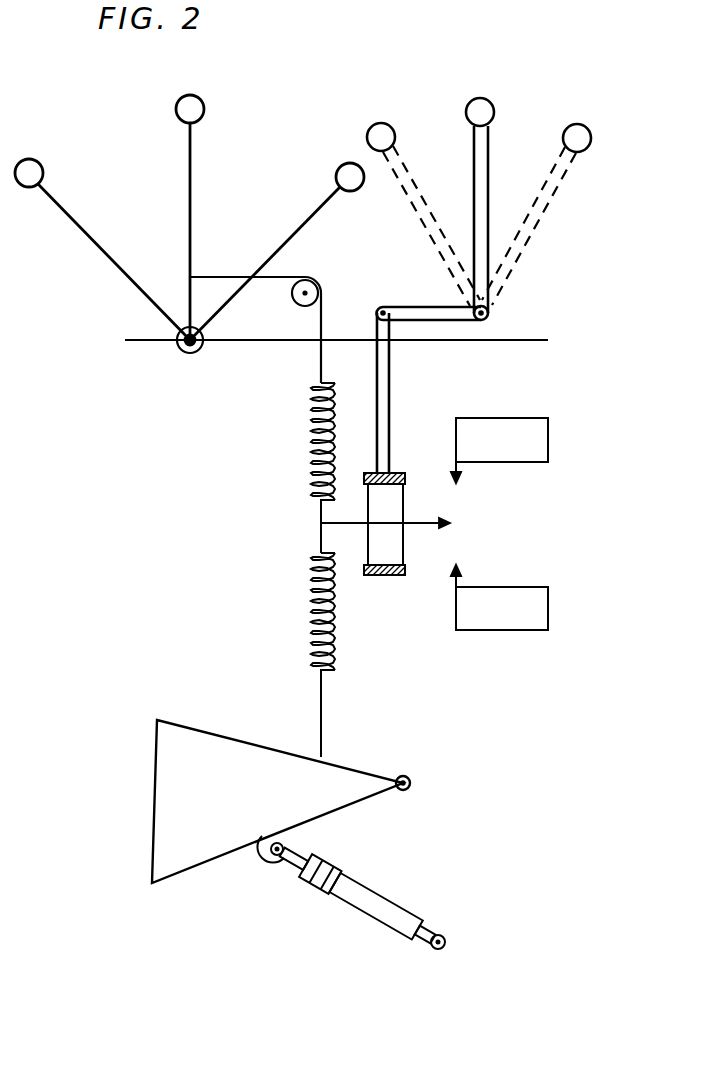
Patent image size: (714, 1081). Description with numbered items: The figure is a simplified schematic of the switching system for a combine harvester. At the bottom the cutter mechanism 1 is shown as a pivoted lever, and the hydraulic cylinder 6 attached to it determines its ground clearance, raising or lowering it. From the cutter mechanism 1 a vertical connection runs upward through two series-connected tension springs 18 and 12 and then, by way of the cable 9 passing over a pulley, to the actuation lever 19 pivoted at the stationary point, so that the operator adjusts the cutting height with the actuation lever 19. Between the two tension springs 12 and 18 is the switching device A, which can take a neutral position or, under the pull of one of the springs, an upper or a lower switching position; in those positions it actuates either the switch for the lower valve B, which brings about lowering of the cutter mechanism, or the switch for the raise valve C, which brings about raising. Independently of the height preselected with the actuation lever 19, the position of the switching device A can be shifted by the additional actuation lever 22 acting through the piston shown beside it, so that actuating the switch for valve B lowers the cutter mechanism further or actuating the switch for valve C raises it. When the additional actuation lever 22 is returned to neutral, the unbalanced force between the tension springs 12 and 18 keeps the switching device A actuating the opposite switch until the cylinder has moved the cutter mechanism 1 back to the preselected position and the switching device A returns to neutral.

The cutter mechanism 1 is at (225, 743).
The hydraulic cylinder 6 is at (352, 912).
The cable 9 is at (318, 351).
The tension spring 12 is at (310, 428).
The tension spring 18 is at (308, 610).
The actuation lever 19 is at (189, 172).
The additional actuation lever 22 is at (474, 175).
The switching device A is at (417, 522).
The lower valve B is at (548, 445).
The raise valve C is at (548, 628).